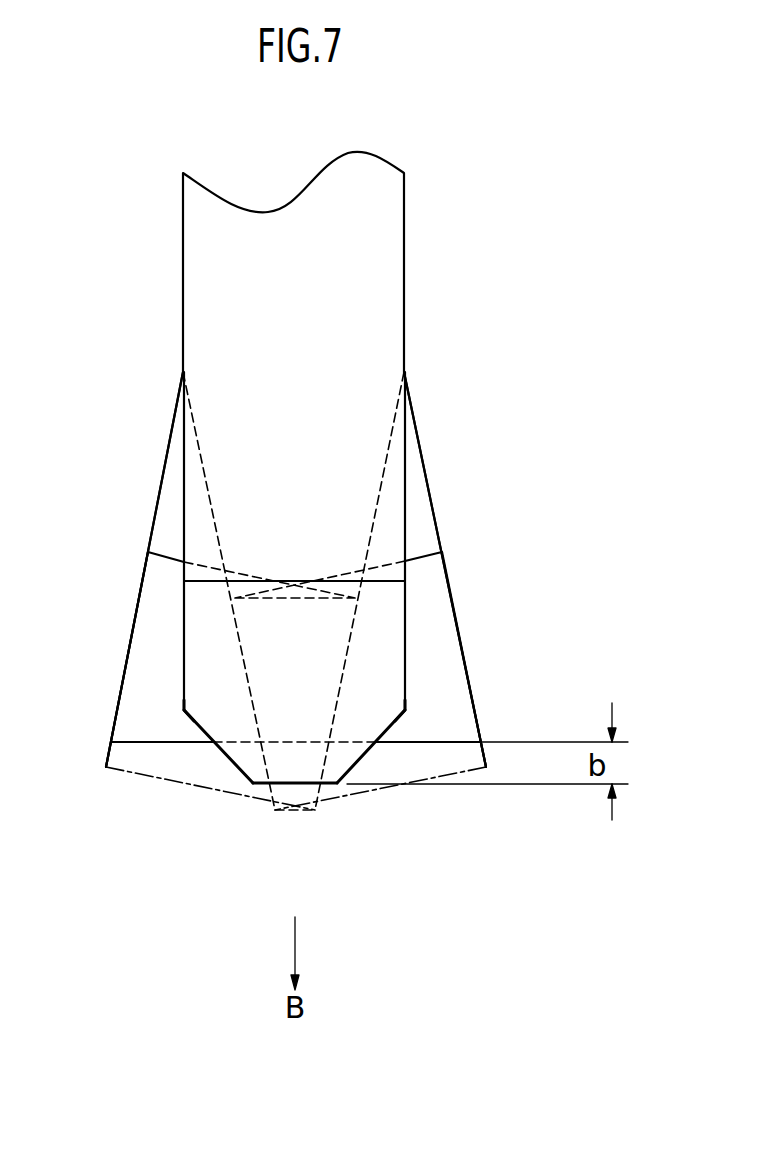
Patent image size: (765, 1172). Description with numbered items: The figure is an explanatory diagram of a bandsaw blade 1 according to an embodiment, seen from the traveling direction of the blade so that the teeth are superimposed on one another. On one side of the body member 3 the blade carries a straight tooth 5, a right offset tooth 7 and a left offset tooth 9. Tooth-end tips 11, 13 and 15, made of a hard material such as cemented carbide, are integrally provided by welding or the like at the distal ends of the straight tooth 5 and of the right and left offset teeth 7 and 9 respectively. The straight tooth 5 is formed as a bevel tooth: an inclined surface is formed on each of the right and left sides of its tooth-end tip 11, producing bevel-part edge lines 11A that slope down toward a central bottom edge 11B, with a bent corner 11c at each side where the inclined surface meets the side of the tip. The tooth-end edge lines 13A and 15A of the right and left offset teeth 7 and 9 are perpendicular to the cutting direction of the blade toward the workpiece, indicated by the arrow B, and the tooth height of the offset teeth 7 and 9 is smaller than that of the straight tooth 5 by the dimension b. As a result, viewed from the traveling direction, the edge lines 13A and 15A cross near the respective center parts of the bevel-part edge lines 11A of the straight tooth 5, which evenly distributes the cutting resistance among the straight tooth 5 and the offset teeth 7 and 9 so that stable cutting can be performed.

The bandsaw blade 1 is at (468, 300).
The body member 3 is at (198, 262).
The straight tooth 5 is at (390, 507).
The right offset tooth 7 is at (428, 537).
The left offset tooth 9 is at (168, 528).
The tooth-end tip 11 is at (383, 647).
The tooth-end tip 13 is at (438, 648).
The tooth-end tip 15 is at (147, 623).
The bent corner of tip portion 11c is at (183, 708).
The bevel-part edge lines 11A is at (215, 745).
The bottom edge of tip portion 11B is at (262, 784).
The tooth-end edge line 15A is at (140, 743).
The tooth-end edge line 13A is at (442, 743).